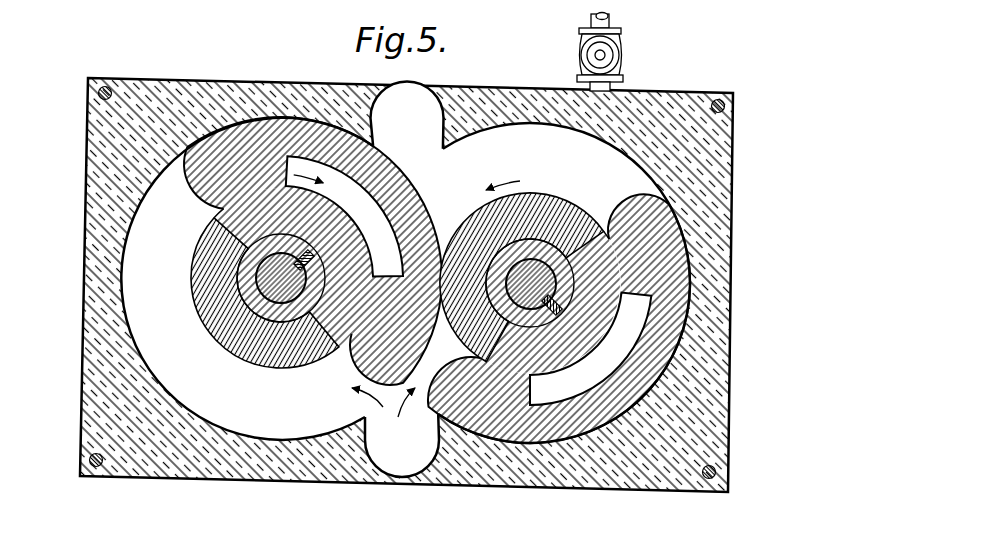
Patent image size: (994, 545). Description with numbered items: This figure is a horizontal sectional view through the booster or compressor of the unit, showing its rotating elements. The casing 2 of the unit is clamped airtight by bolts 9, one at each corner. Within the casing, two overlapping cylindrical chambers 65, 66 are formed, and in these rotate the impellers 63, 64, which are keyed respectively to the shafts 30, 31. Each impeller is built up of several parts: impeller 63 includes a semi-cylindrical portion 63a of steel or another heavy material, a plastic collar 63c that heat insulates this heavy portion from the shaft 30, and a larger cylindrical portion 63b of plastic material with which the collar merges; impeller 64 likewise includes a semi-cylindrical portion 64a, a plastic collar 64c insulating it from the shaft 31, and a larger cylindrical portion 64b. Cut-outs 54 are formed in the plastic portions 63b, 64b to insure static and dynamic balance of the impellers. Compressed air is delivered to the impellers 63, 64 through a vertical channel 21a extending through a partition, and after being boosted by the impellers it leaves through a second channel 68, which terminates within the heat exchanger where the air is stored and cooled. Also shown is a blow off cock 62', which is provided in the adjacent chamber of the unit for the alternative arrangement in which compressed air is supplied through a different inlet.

The casing 2 is at (714, 328).
The bolts 9 is at (89, 459).
The vertical channel 21a is at (402, 445).
The shaft 30 is at (262, 277).
The shaft 31 is at (532, 262).
The cut-outs 54 is at (362, 213).
The blow off cock 62' is at (622, 52).
The impeller 63 is at (297, 257).
The semi-cylindrical portion 63a is at (210, 313).
The larger cylindrical portion 63b is at (349, 256).
The plastic collar 63c is at (245, 290).
The impeller 64 is at (559, 302).
The semi-cylindrical portion 64a is at (472, 222).
The larger cylindrical portion 64b is at (565, 369).
The plastic collar 64c is at (515, 250).
The cylindrical chamber 65 is at (166, 249).
The cylindrical chamber 66 is at (547, 155).
The second channel 68 is at (418, 130).